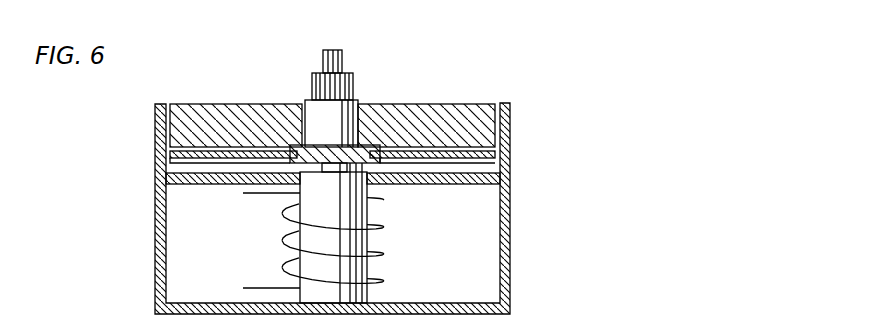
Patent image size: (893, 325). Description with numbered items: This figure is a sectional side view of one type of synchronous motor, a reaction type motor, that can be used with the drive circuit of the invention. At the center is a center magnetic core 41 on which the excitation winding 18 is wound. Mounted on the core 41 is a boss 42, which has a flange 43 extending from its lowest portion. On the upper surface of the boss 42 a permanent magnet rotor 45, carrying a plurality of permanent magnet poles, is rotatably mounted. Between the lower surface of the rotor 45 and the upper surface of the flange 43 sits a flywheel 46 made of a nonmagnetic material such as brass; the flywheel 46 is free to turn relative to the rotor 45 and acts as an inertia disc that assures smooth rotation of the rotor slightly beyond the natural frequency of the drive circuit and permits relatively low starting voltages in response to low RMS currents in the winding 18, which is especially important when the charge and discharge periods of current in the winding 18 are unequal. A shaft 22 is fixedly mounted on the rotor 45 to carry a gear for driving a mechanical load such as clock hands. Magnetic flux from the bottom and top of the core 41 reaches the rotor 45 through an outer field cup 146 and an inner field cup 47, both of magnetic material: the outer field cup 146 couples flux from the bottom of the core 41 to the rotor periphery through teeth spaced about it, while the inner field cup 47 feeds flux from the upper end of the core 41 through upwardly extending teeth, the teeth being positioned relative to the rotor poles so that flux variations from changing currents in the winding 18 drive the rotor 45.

The outer field cup 146 is at (510, 242).
The permanent magnet rotor 45 is at (221, 104).
The inner field cup 47 is at (511, 123).
The shaft 22 is at (357, 101).
The boss 42 is at (304, 148).
The flywheel 46 is at (484, 158).
The flange 43 is at (291, 163).
The center magnetic core 41 is at (365, 266).
The winding 18 is at (290, 243).